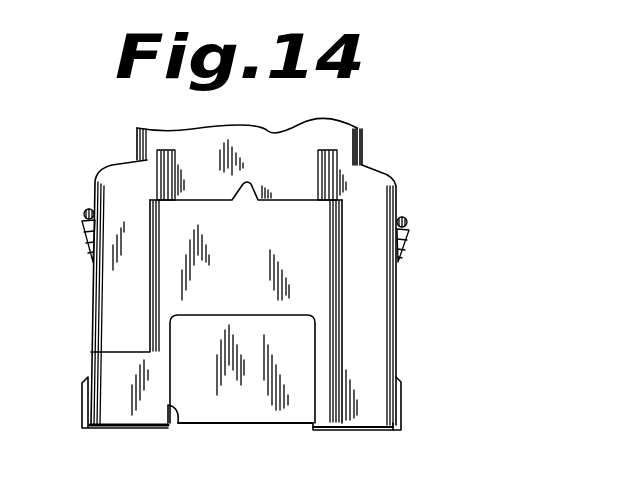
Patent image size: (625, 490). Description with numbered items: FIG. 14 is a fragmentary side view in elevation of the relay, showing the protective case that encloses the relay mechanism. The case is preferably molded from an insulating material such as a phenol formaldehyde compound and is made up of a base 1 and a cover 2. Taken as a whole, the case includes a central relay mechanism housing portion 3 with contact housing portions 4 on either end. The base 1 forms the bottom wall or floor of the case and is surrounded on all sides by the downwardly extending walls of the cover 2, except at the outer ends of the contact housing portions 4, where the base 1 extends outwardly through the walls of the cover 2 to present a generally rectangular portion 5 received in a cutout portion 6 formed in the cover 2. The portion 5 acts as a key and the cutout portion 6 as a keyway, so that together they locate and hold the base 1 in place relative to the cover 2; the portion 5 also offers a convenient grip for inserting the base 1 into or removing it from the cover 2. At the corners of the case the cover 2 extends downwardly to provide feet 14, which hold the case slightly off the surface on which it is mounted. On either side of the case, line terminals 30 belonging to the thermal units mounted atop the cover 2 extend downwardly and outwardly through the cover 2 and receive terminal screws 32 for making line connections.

The base 1 is at (200, 417).
The cover 2 is at (398, 182).
The central relay mechanism housing portion 3 is at (127, 272).
The contact housing portion 4 is at (313, 300).
The generally rectangular portion 5 is at (253, 407).
The cutout portion 6 is at (177, 420).
The foot 14 is at (102, 428).
The line terminal 30 is at (80, 228).
The terminal screw 32 is at (84, 211).